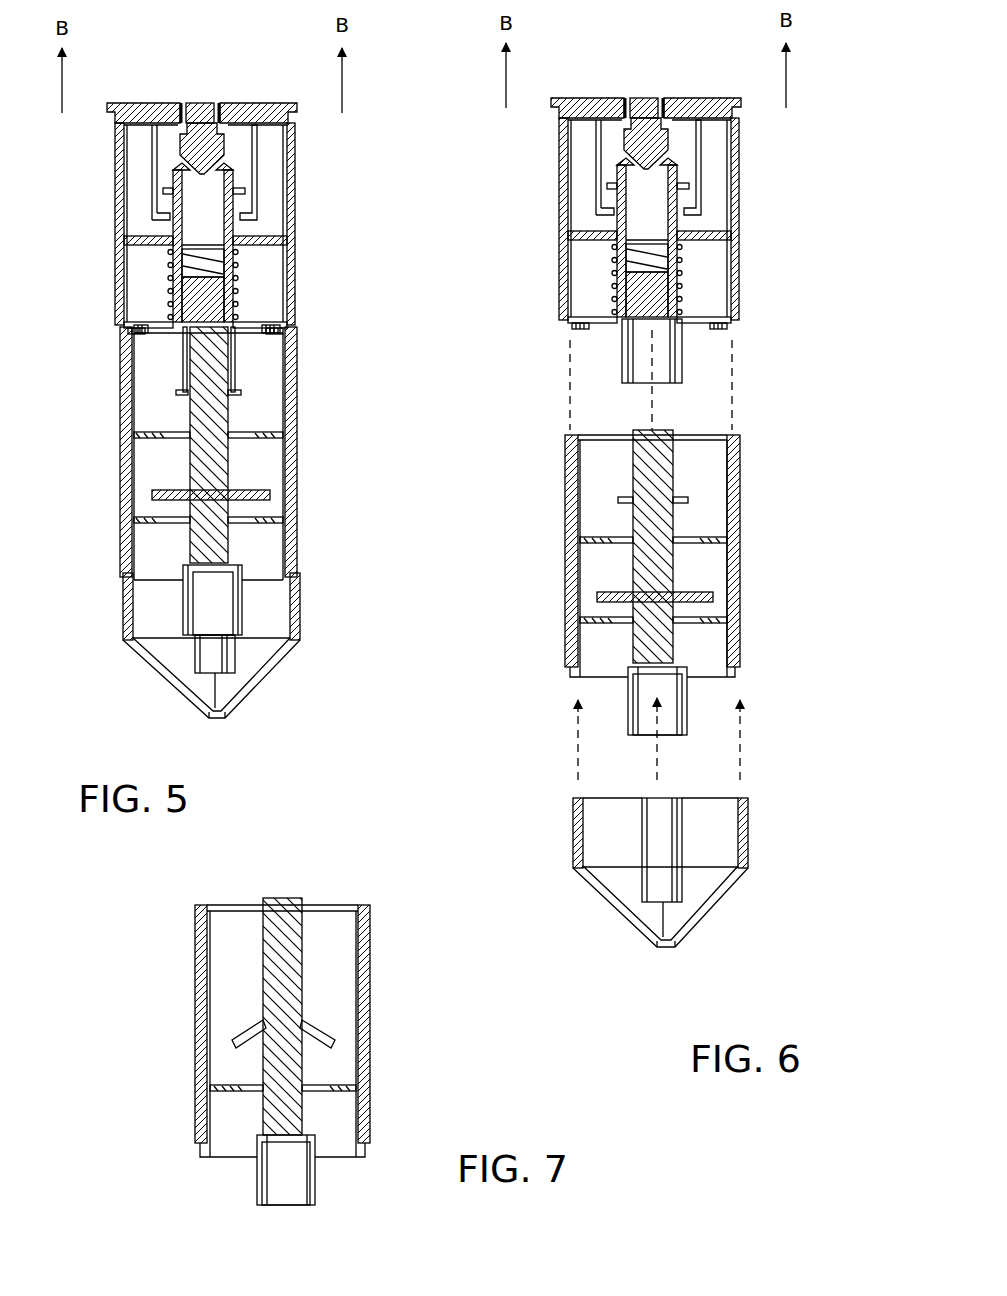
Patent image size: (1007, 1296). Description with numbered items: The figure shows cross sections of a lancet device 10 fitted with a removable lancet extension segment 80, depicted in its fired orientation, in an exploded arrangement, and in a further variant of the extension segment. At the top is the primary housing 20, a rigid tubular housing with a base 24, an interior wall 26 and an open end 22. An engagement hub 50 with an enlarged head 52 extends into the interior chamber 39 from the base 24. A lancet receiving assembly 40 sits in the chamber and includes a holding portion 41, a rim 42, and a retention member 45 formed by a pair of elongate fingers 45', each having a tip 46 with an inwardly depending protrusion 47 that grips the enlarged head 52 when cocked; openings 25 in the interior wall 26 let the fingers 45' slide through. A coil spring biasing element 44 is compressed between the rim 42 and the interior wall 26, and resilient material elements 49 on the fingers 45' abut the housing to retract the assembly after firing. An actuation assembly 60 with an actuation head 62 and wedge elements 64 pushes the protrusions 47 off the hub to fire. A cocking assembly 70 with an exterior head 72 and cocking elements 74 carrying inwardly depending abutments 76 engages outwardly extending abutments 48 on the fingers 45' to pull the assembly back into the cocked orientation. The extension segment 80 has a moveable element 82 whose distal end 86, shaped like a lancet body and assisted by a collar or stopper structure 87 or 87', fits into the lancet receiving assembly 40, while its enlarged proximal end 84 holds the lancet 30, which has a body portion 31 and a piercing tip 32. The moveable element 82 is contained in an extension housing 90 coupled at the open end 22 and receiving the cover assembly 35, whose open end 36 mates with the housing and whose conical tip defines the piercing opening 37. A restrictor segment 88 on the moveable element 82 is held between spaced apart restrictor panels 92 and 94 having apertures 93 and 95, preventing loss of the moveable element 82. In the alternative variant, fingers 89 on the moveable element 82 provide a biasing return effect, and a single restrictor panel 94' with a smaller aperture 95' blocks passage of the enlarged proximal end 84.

In FIG. 5, the lancet device 10 is at (250, 391).
In FIG. 6, the lancet device 10 is at (621, 177).
In FIG. 5, the primary housing 20 is at (234, 182).
In FIG. 6, the primary housing 20 is at (665, 177).
In FIG. 5, the open end 22 is at (293, 327).
In FIG. 6, the open end 22 is at (737, 322).
In FIG. 5, the base 24 is at (272, 127).
In FIG. 6, the base 24 is at (716, 122).
In FIG. 5, the openings 25 is at (173, 247).
In FIG. 6, the openings 25 is at (617, 242).
In FIG. 5, the interior wall 26 is at (268, 233).
In FIG. 6, the interior wall 26 is at (712, 228).
In FIG. 5, the lancet 30 is at (167, 687).
In FIG. 6, the lancet 30 is at (614, 881).
In FIG. 5, the body portion 31 is at (190, 648).
In FIG. 6, the body portion 31 is at (642, 877).
In FIG. 5, the piercing tip 32 is at (200, 705).
In FIG. 6, the piercing tip 32 is at (655, 930).
In FIG. 5, the cover assembly 35 is at (240, 706).
In FIG. 6, the cover assembly 35 is at (690, 934).
In FIG. 5, the open end of the cover assembly 36 is at (302, 617).
In FIG. 6, the open end of the cover assembly 36 is at (745, 845).
In FIG. 5, the piercing opening 37 is at (218, 720).
In FIG. 6, the piercing opening 37 is at (667, 948).
In FIG. 5, the interior chamber 39 is at (254, 318).
In FIG. 6, the interior chamber 39 is at (698, 313).
In FIG. 5, the lancet receiving assembly 40 is at (176, 363).
In FIG. 6, the lancet receiving assembly 40 is at (599, 357).
In FIG. 5, the holding portion 41 is at (182, 383).
In FIG. 6, the holding portion 41 is at (622, 378).
In FIG. 5, the rim 42 is at (168, 323).
In FIG. 6, the rim 42 is at (612, 318).
In FIG. 5, the biasing element 44 is at (238, 300).
In FIG. 6, the biasing element 44 is at (682, 295).
In FIG. 5, the retention member 45 is at (274, 154).
In FIG. 6, the retention member 45 is at (718, 149).
In FIG. 5, the elongate fingers 45' is at (283, 184).
In FIG. 6, the elongate fingers 45' is at (727, 179).
In FIG. 5, the tip 46 is at (173, 177).
In FIG. 6, the tip 46 is at (617, 172).
In FIG. 5, the inwardly depending protrusion 47 is at (187, 177).
In FIG. 6, the inwardly depending protrusion 47 is at (631, 172).
In FIG. 5, the outwardly extending abutment 48 is at (160, 190).
In FIG. 6, the outwardly extending abutment 48 is at (604, 185).
In FIG. 5, the resilient material elements 49 is at (232, 233).
In FIG. 6, the resilient material elements 49 is at (676, 228).
In FIG. 5, the engagement hub 50 is at (198, 108).
In FIG. 6, the engagement hub 50 is at (642, 103).
In FIG. 5, the enlarged head 52 is at (187, 153).
In FIG. 6, the enlarged head 52 is at (631, 148).
In FIG. 5, the actuation assembly 60 is at (177, 99).
In FIG. 6, the actuation assembly 60 is at (621, 94).
In FIG. 5, the actuation head 62 is at (207, 103).
In FIG. 6, the actuation head 62 is at (651, 98).
In FIG. 5, the wedge elements 64 is at (190, 157).
In FIG. 6, the wedge elements 64 is at (634, 152).
In FIG. 5, the cocking assembly 70 is at (210, 91).
In FIG. 6, the cocking assembly 70 is at (654, 86).
In FIG. 5, the exterior head 72 is at (248, 103).
In FIG. 6, the exterior head 72 is at (692, 98).
In FIG. 5, the cocking elements 74 is at (148, 213).
In FIG. 6, the cocking elements 74 is at (592, 208).
In FIG. 5, the inwardly depending abutment 76 is at (153, 223).
In FIG. 6, the inwardly depending abutment 76 is at (597, 218).
In FIG. 5, the lancet extension segment 80 is at (232, 550).
In FIG. 6, the lancet extension segment 80 is at (664, 607).
In FIG. 7, the lancet extension segment 80 is at (305, 1051).
In FIG. 5, the moveable element 82 is at (212, 415).
In FIG. 6, the moveable element 82 is at (655, 570).
In FIG. 7, the moveable element 82 is at (282, 983).
In FIG. 5, the proximal end 84 is at (242, 597).
In FIG. 6, the proximal end 84 is at (693, 718).
In FIG. 7, the proximal end 84 is at (318, 1188).
In FIG. 5, the distal end 86 is at (215, 368).
In FIG. 6, the distal end 86 is at (657, 478).
In FIG. 7, the distal end 86 is at (285, 940).
In FIG. 6, the collar or stopper type structure 87 is at (703, 484).
In FIG. 7, the collar or stopper type structure 87' is at (206, 944).
In FIG. 5, the restrictor segment 88 is at (211, 495).
In FIG. 6, the restrictor segment 88 is at (597, 597).
In FIG. 7, the fingers 89 is at (237, 1043).
In FIG. 5, the extension housing 90 is at (298, 498).
In FIG. 6, the extension housing 90 is at (752, 600).
In FIG. 7, the extension housing 90 is at (377, 1068).
In FIG. 6, the restrictor panel 92 is at (597, 540).
In FIG. 6, the aperture 93 is at (618, 537).
In FIG. 6, the restrictor panel 94 is at (580, 644).
In FIG. 7, the restrictor panel 94' is at (208, 1123).
In FIG. 6, the aperture 95 is at (732, 644).
In FIG. 7, the aperture 95' is at (361, 1113).